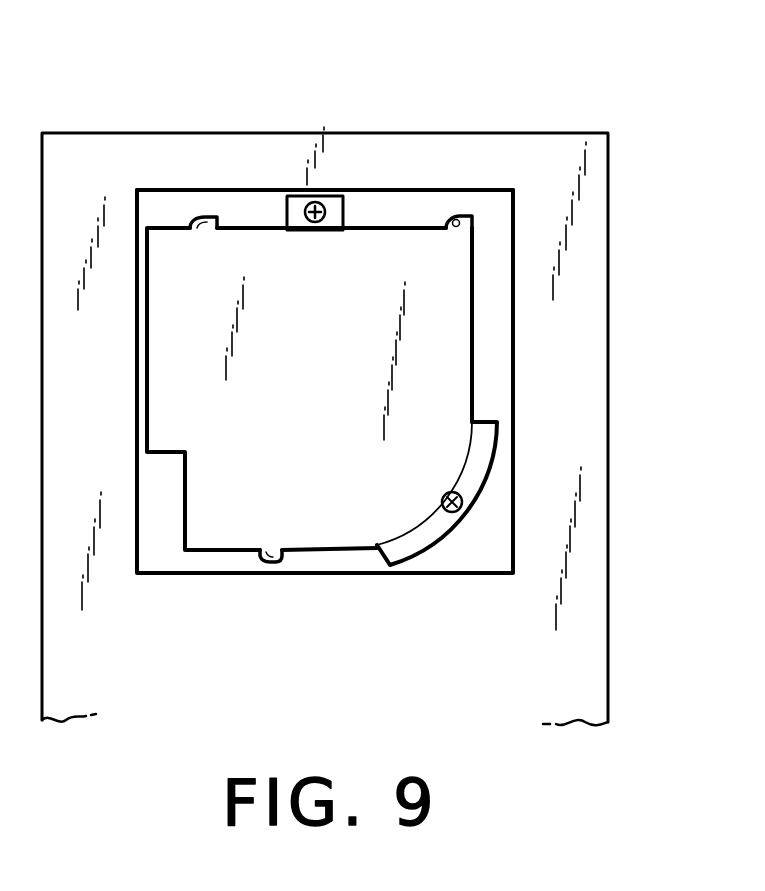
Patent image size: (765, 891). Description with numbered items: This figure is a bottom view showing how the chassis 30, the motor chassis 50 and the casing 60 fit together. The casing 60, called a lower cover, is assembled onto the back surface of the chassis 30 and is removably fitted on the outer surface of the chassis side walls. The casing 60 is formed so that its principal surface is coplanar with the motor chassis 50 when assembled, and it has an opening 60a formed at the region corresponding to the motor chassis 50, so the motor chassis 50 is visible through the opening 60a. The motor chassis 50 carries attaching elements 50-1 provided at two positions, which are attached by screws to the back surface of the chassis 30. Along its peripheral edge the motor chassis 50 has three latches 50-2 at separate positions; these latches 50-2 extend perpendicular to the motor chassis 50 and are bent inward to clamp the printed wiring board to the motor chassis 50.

The chassis 30 is at (485, 222).
The motor chassis 50 is at (438, 395).
The attaching elements 50-1 is at (340, 212).
The latches 50-2 is at (203, 218).
The casing 60 is at (578, 248).
The opening 60a is at (497, 330).